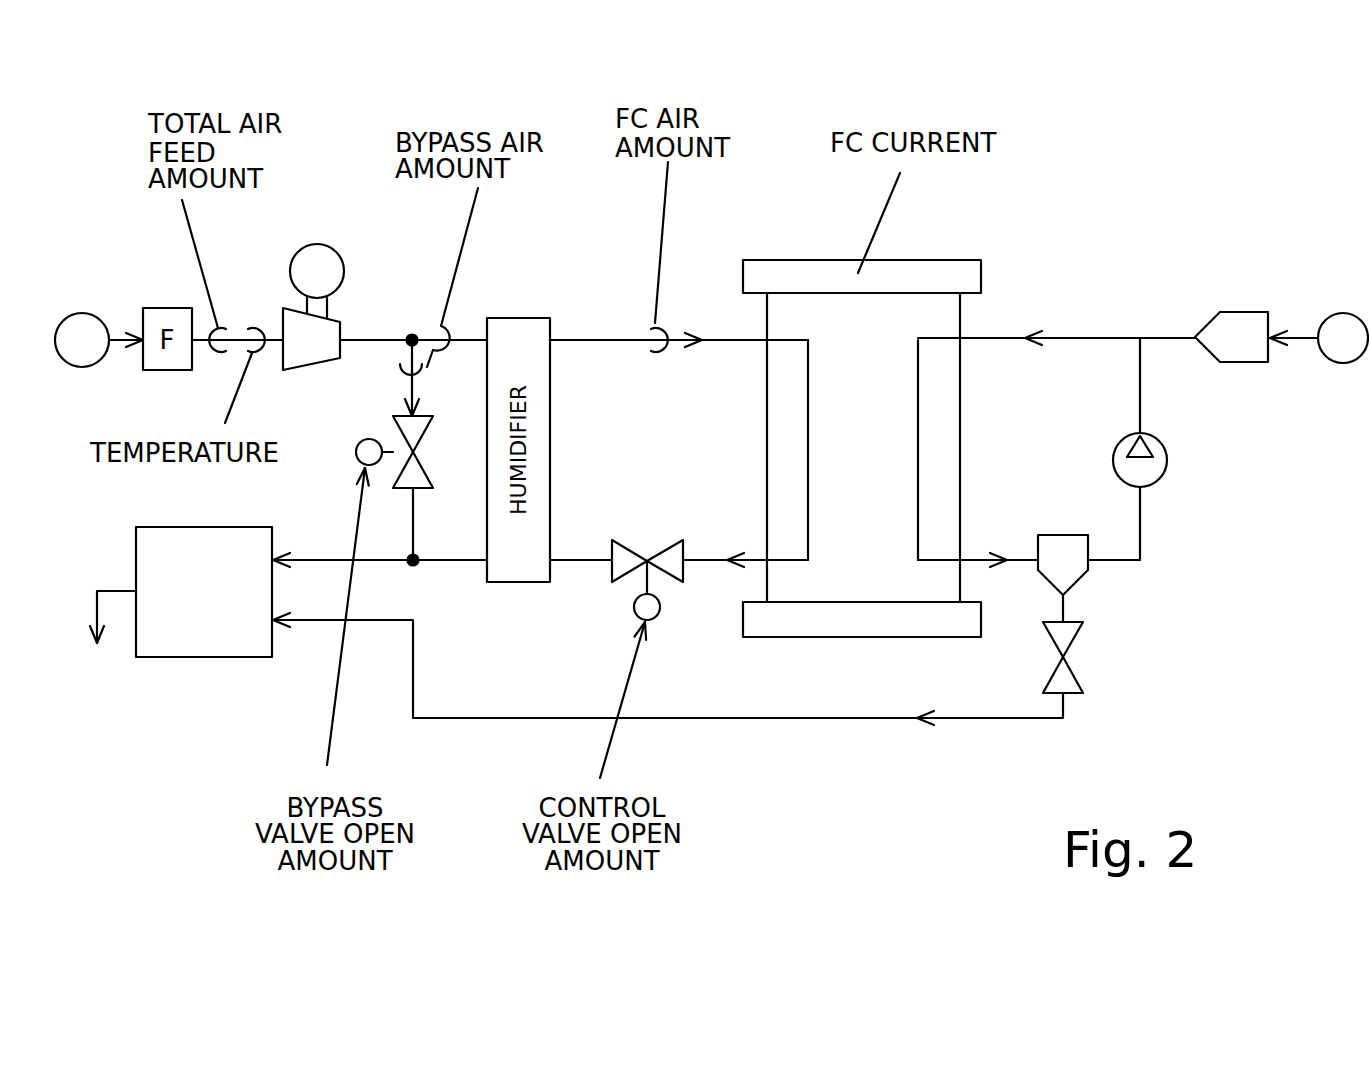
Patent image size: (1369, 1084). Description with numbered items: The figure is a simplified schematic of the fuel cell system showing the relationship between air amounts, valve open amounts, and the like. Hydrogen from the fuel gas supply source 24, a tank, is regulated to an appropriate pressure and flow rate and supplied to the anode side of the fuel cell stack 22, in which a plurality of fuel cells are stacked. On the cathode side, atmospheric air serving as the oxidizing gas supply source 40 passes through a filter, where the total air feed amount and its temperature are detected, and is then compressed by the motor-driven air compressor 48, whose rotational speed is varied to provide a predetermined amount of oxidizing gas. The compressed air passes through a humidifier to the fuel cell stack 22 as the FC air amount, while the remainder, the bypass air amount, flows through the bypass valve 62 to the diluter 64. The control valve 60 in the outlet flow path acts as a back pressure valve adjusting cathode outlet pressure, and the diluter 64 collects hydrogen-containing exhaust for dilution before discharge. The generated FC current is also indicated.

The fuel cell stack 22 is at (981, 313).
The fuel gas supply source 24 is at (1344, 313).
The oxidizing gas supply source 40 is at (63, 320).
The air compressor 48 is at (341, 318).
The control valve 60 is at (613, 608).
The bypass valve 62 is at (354, 457).
The diluter 64 is at (200, 657).